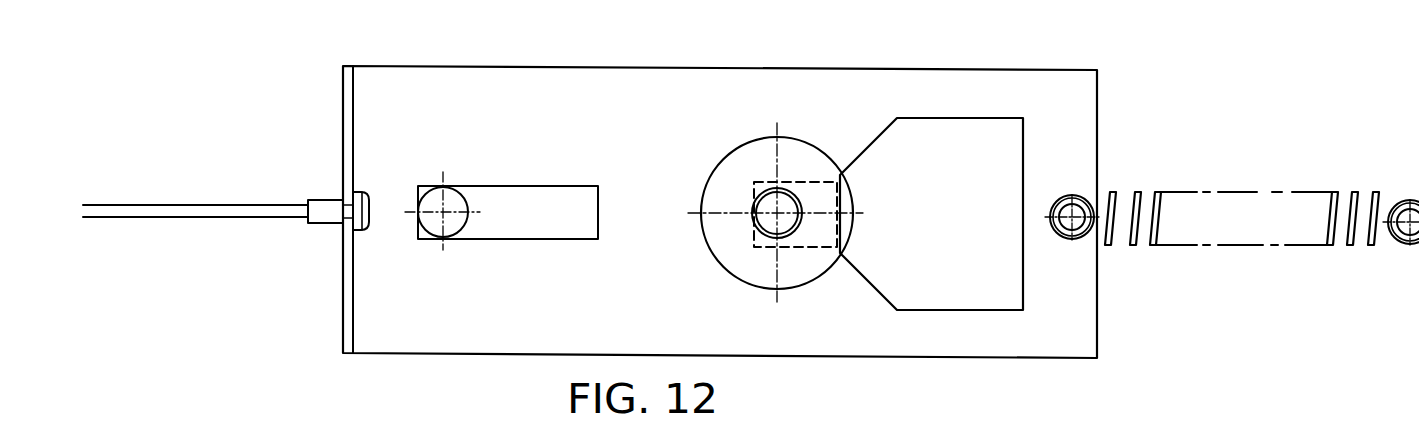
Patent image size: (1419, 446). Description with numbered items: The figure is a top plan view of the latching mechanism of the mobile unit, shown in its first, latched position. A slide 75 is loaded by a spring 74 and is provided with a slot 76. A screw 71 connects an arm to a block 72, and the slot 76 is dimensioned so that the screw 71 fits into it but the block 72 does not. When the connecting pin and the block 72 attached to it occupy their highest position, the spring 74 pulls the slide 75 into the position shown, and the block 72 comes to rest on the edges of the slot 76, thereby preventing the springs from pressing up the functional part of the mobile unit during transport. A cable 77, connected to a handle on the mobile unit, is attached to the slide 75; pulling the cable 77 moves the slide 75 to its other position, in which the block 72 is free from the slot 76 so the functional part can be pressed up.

The screw 71 is at (792, 204).
The block 72 is at (735, 185).
The spring 74 is at (1297, 238).
The slide 75 is at (710, 108).
The slot 76 is at (815, 230).
The cable 77 is at (212, 211).